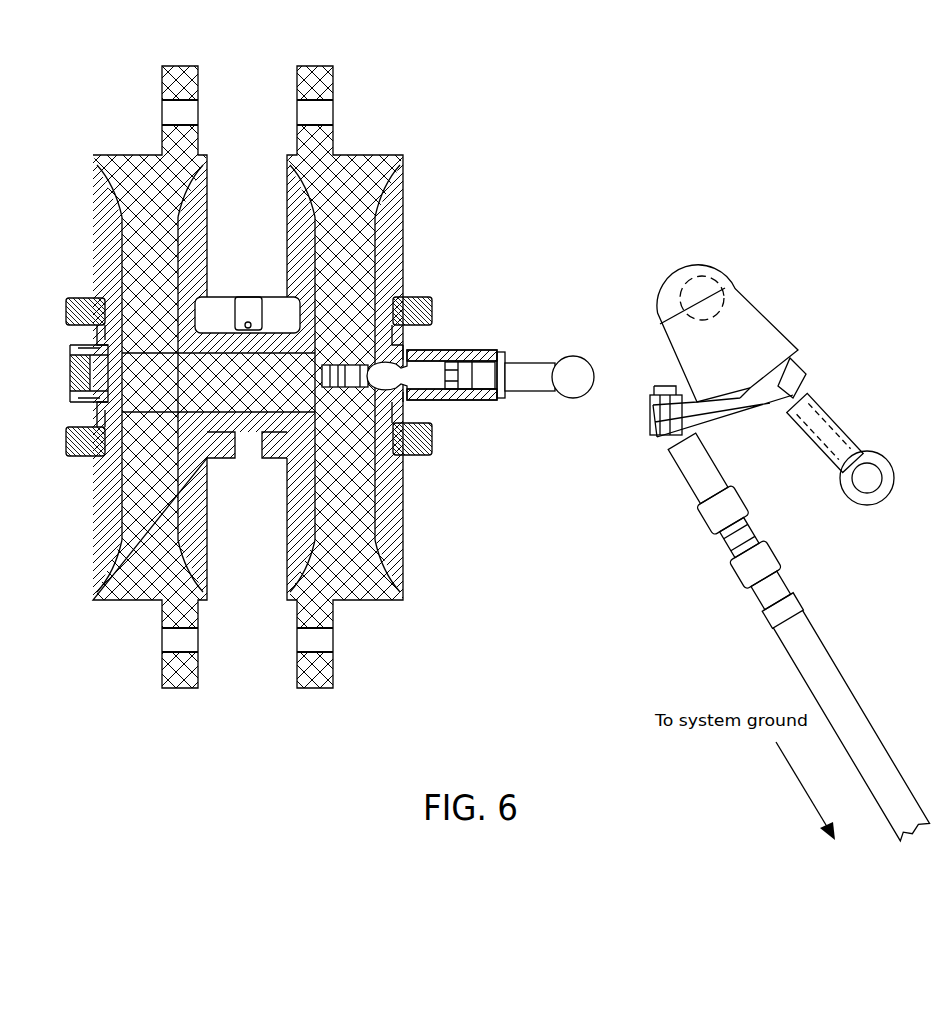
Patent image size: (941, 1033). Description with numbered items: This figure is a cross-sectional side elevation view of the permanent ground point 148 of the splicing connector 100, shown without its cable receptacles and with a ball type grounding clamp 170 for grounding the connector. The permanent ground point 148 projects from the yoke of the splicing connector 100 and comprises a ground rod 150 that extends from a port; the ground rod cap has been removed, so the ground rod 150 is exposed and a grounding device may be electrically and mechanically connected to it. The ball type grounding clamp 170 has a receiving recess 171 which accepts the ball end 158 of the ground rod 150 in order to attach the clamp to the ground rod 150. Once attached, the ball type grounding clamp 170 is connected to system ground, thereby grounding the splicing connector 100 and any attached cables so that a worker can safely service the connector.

The splicing connector 100 is at (457, 142).
The permanent ground point 148 is at (521, 299).
The ground rod 150 is at (522, 382).
The ball end 158 is at (575, 366).
The ball type grounding clamp 170 is at (791, 515).
The receiving recess 171 is at (705, 297).